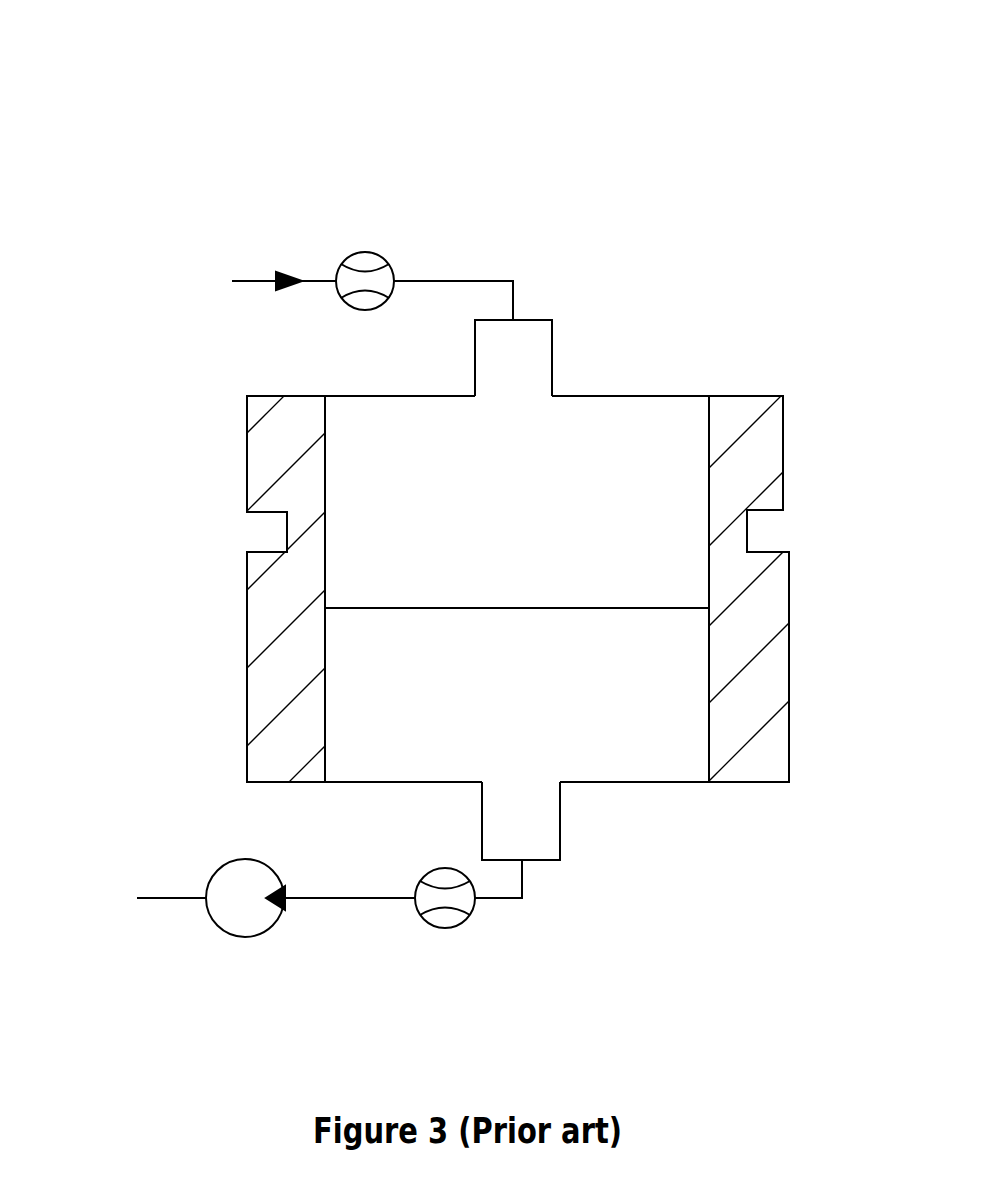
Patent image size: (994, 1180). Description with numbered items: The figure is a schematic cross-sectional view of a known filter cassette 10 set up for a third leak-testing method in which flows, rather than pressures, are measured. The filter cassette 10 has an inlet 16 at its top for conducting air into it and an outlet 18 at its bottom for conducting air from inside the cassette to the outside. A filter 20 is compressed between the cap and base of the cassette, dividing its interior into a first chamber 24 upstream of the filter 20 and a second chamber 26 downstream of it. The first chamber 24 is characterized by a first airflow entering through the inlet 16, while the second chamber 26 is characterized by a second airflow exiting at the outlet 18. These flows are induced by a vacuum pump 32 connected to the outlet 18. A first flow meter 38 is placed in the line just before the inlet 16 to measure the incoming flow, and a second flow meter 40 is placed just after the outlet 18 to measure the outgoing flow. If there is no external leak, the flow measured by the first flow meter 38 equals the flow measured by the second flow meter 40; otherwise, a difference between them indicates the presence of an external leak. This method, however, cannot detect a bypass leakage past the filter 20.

The filter cassette 10 is at (693, 213).
The inlet 16 is at (528, 382).
The outlet 18 is at (535, 797).
The filter 20 is at (540, 608).
The first chamber 24 is at (365, 545).
The second chamber 26 is at (372, 680).
The vacuum pump 32 is at (223, 862).
The first flow meter 38 is at (371, 250).
The second flow meter 40 is at (430, 871).